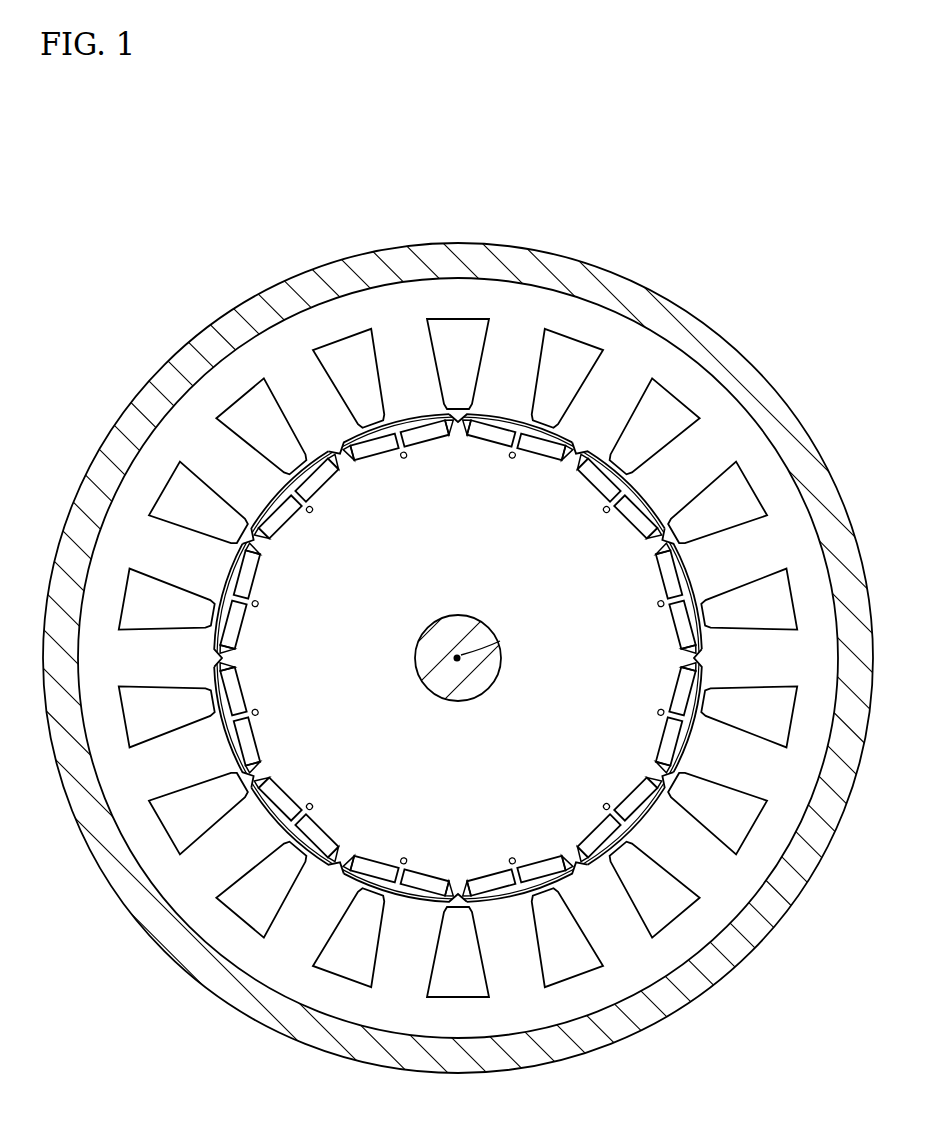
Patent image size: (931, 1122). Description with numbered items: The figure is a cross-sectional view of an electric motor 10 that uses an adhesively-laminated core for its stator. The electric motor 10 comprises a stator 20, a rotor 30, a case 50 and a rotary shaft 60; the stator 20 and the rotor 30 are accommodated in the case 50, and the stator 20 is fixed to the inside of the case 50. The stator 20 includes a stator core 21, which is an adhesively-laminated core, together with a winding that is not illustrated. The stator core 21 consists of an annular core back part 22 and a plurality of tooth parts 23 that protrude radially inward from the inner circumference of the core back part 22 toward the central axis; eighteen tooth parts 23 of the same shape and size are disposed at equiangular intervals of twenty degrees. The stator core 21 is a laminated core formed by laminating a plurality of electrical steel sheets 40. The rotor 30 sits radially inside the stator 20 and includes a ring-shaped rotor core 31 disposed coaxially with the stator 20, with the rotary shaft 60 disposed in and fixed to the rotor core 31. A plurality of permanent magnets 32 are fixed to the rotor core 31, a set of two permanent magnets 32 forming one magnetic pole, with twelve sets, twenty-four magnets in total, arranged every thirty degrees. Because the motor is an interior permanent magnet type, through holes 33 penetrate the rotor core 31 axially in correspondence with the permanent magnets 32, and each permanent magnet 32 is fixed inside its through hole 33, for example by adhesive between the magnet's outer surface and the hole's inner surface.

The electric motor 10 is at (755, 151).
The stator 20 is at (742, 405).
The stator core 21 is at (683, 205).
The core back part 22 is at (648, 347).
The tooth parts 23 is at (597, 375).
The rotor 30 is at (403, 662).
The rotor core 31 is at (355, 845).
The permanent magnets 32 is at (528, 452).
The through holes 33 is at (482, 886).
The electrical steel sheets 40 is at (240, 372).
The case 50 is at (798, 447).
The rotary shaft 60 is at (490, 675).